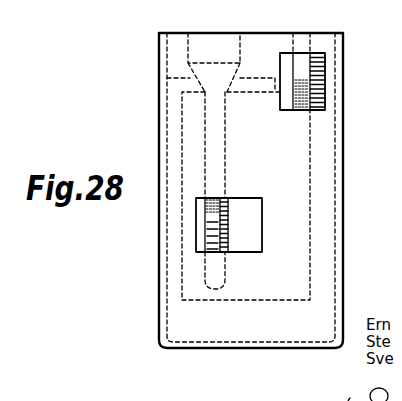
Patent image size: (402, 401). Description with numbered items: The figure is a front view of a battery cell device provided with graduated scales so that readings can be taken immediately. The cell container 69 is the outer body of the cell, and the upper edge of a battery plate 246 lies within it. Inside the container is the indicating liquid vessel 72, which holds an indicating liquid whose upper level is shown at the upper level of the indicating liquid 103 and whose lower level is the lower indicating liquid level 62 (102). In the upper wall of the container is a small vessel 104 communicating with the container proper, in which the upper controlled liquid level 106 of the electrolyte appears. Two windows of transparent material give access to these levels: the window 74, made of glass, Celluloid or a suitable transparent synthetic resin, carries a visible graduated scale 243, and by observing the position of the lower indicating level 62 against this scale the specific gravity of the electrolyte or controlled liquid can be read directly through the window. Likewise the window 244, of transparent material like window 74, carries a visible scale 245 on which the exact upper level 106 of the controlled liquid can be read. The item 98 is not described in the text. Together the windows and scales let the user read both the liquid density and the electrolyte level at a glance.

The record card body 98 is at (188, 50).
The cell container 69 is at (358, 214).
The window 74 is at (196, 252).
The upper level of the indicating liquid 103 is at (237, 61).
The upper controlled liquid level 106 is at (255, 75).
The upper edge of a battery plate 246 is at (267, 93).
The indicating liquid vessel 72 is at (205, 128).
The small vessel 104 is at (317, 78).
The window 244 is at (290, 111).
The scale 245 is at (317, 110).
The lower indicating liquid level 62 is at (174, 238).
The lower indicating liquid level 102 is at (148, 224).
The graduated scale 243 is at (226, 252).